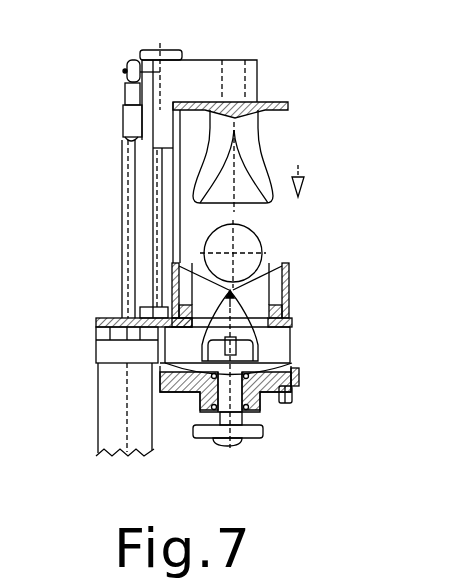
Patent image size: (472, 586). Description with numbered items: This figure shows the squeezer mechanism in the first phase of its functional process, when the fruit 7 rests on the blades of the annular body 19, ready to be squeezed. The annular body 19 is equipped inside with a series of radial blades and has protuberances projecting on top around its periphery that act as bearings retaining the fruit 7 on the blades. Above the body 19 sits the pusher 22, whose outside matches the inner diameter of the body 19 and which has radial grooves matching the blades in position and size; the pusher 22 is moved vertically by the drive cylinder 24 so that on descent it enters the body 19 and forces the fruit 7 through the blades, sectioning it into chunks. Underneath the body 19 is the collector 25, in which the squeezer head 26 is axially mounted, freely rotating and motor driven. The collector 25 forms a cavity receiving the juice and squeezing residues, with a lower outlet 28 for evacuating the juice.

The pusher 22 is at (265, 150).
The fruit 7 is at (261, 237).
The annular body 19 is at (292, 282).
The squeezer head 26 is at (243, 332).
The collector 25 is at (296, 346).
The lower outlet 28 is at (303, 400).
The drive cylinder 24 is at (92, 428).